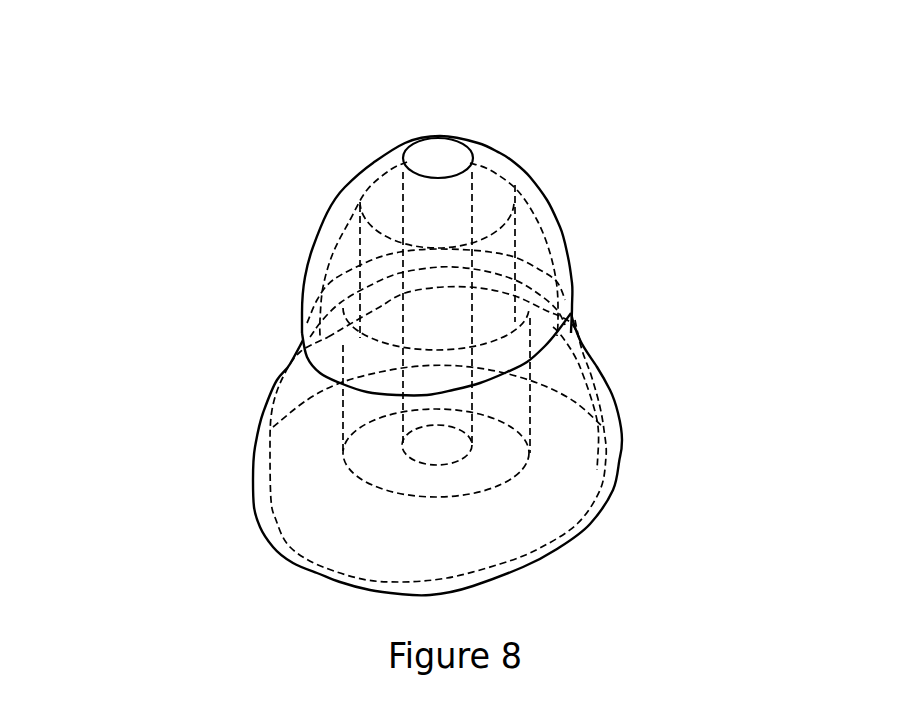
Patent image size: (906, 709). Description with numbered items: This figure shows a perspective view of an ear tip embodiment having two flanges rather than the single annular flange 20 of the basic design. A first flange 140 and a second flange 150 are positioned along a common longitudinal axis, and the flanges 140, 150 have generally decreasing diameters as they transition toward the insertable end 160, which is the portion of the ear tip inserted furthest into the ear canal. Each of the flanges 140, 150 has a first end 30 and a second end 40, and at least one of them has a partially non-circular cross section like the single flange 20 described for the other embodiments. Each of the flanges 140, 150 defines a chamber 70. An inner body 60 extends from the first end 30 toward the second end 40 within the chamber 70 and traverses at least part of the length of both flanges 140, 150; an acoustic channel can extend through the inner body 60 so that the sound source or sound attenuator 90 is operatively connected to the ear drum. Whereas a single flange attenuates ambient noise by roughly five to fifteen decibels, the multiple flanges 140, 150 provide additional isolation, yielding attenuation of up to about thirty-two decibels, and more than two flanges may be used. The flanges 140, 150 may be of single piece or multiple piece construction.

The annular flange 20 is at (617, 394).
The first end 30 is at (529, 177).
The second end 40 is at (574, 312).
The inner body 60 is at (378, 460).
The chamber 70 is at (388, 533).
The sound source or sound attenuator 90 is at (472, 145).
The first flange 140 is at (611, 486).
The second flange 150 is at (572, 220).
The insertable end 160 is at (260, 169).